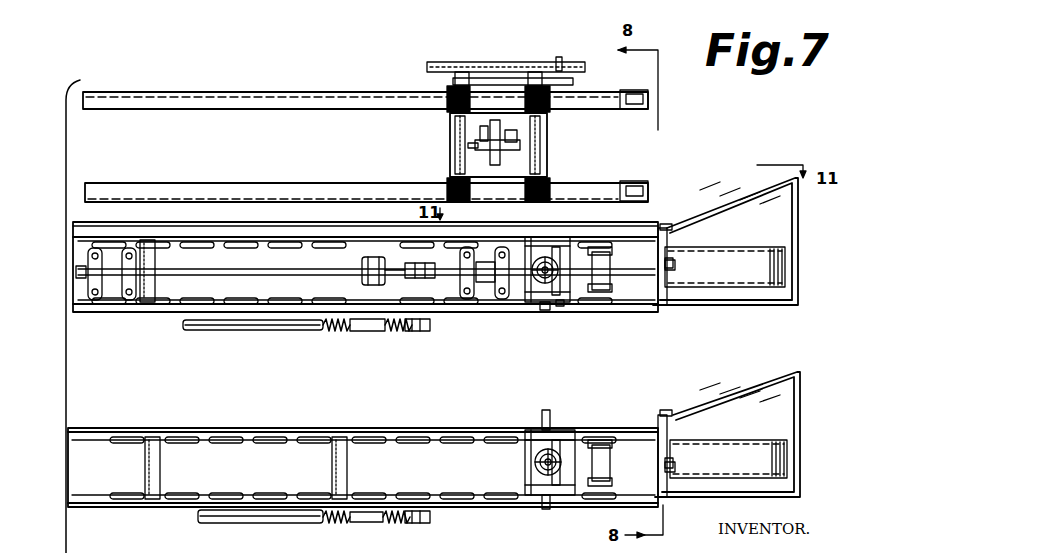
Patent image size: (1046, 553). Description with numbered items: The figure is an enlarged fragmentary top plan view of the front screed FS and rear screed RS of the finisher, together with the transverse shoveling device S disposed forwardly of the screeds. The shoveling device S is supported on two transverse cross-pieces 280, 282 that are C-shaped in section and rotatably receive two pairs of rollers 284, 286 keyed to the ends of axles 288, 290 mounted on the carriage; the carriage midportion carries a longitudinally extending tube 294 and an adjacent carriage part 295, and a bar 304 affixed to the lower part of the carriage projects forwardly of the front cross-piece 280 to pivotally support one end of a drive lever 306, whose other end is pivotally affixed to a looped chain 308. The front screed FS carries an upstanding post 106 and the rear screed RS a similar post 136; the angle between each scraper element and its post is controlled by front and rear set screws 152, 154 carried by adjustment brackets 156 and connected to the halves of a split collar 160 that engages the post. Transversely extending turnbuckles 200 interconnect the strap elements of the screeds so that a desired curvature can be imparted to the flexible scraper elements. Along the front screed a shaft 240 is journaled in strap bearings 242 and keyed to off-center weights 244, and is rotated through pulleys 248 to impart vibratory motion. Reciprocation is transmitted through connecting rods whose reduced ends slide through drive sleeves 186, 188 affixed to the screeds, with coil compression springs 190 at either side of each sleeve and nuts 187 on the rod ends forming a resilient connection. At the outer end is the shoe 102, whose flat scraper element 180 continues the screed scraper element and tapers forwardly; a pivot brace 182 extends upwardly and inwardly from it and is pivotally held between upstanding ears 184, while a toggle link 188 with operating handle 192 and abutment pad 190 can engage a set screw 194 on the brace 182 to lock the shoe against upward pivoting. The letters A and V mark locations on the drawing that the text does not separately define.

The shoe 102 is at (782, 308).
The upstanding post 106 is at (545, 284).
The post 136 is at (536, 460).
The front set screw 152 is at (540, 238).
The rear set screw 154 is at (542, 428).
The adjustment bracket 156 is at (148, 290).
The split collar 160 is at (565, 270).
The flat scraper element 180 is at (792, 220).
The pivot brace 182 is at (242, 324).
The upstanding ears 184 is at (602, 290).
The drive sleeve 186 is at (361, 331).
The nut 187 is at (428, 326).
The drive sleeve 188 is at (668, 305).
The coil compression spring 190 is at (330, 333).
The operating handle 192 is at (660, 226).
The set screw 194 is at (682, 262).
The turnbuckle 200 is at (258, 243).
The shaft 240 is at (223, 272).
The strap bearing 242 is at (139, 268).
The off-center weight 244 is at (500, 250).
The pulley 248 is at (375, 256).
The transverse cross-piece 280 is at (224, 93).
The transverse cross-piece 282 is at (214, 183).
The rollers 284 is at (550, 97).
The rollers 286 is at (446, 96).
The axle 288 is at (546, 138).
The axle 290 is at (455, 146).
The longitudinally extending tube 294 is at (493, 147).
The post 295 is at (458, 134).
The longitudinally extending bar 304 is at (471, 62).
The drive lever 306 is at (508, 78).
The looped chain 308 is at (555, 60).
The front screed FS is at (148, 304).
The rear screed RS is at (144, 498).
The point A is at (589, 208).
The point V is at (511, 326).
The transverse shoveling device S is at (576, 138).